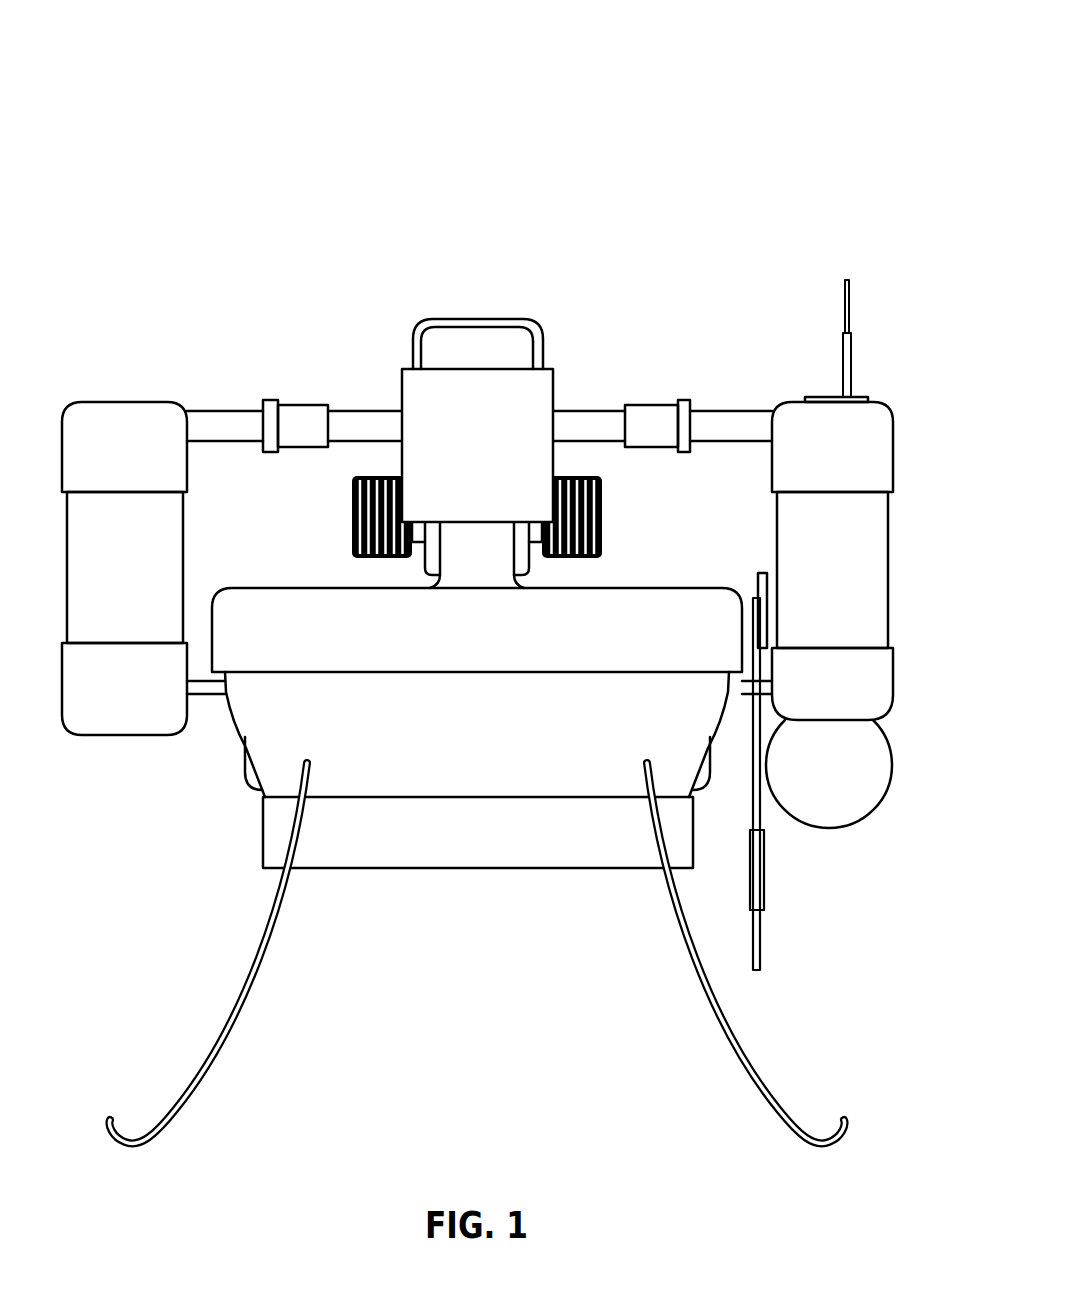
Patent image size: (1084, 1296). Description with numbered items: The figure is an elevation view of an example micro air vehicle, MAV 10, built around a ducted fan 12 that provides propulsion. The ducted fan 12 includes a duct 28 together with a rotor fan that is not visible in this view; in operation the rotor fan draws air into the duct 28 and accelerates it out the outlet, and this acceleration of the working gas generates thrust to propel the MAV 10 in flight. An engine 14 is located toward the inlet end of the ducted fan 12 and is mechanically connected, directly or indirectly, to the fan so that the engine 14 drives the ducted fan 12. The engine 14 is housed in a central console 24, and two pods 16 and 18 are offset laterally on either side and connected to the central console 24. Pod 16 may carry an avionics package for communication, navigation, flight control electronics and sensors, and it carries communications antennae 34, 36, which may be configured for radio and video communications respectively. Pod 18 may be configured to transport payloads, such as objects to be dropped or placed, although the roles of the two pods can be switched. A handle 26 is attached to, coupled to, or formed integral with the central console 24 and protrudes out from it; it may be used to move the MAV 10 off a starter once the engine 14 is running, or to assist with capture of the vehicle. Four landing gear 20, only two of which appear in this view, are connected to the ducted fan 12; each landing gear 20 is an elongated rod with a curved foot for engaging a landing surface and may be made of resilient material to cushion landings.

The MAV 10 is at (503, 142).
The ducted fan 12 is at (220, 736).
The engine 14 is at (320, 507).
The pod 16 is at (890, 405).
The pod 18 is at (145, 402).
The landing gear 20 is at (253, 977).
The central console 24 is at (433, 423).
The handle 26 is at (520, 319).
The duct 28 is at (275, 740).
The communications antenna 34 is at (850, 300).
The communications antenna 36 is at (762, 937).